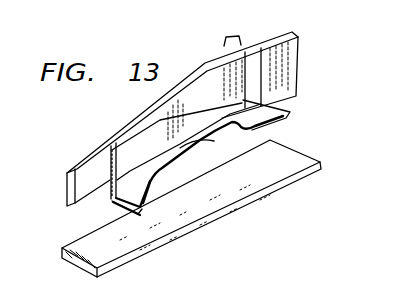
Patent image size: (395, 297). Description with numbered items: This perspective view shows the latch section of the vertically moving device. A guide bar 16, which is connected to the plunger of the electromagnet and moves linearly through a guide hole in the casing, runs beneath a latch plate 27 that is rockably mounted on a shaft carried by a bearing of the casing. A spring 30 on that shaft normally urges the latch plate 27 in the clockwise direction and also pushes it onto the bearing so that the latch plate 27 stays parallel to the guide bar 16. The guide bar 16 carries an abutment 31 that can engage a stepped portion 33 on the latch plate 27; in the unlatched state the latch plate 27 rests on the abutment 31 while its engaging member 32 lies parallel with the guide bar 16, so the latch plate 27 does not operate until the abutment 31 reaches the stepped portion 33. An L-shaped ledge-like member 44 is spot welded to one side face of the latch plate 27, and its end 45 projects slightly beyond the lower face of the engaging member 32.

The guide bar 16 is at (123, 247).
The latch plate 27 is at (285, 62).
The spring 30 is at (208, 52).
The abutment 31 is at (112, 204).
The engaging member 32 is at (196, 148).
The stepped portion 33 is at (216, 141).
The ledge-like member 44 is at (286, 121).
The end 45 is at (143, 209).